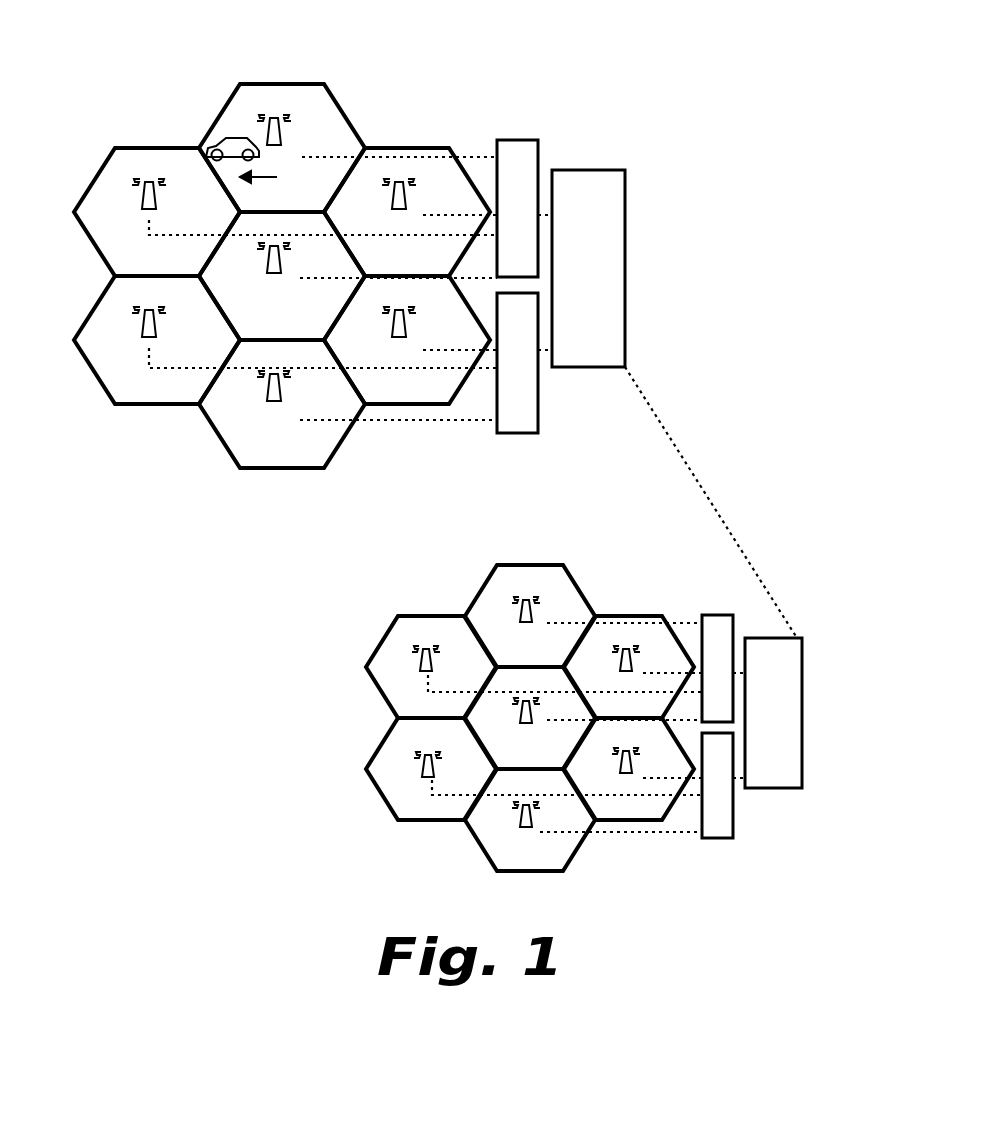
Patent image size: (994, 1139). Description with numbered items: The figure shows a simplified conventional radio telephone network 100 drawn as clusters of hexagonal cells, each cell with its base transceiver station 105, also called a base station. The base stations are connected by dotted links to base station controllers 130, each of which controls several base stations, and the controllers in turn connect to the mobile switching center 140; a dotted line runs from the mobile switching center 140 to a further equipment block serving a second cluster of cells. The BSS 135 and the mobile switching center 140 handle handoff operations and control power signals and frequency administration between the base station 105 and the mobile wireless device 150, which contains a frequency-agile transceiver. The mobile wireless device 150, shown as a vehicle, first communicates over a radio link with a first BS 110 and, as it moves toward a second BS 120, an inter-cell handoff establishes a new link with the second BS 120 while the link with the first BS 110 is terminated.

The radio telephone network 100 is at (794, 309).
The cell and its base transceiver station 105 is at (422, 148).
The first BS 110 is at (334, 136).
The second BS 120 is at (157, 212).
The base station controller 130 is at (527, 140).
The BSS 135 is at (520, 77).
The mobile switching center 140 is at (625, 224).
The mobile wireless device 150 is at (210, 134).